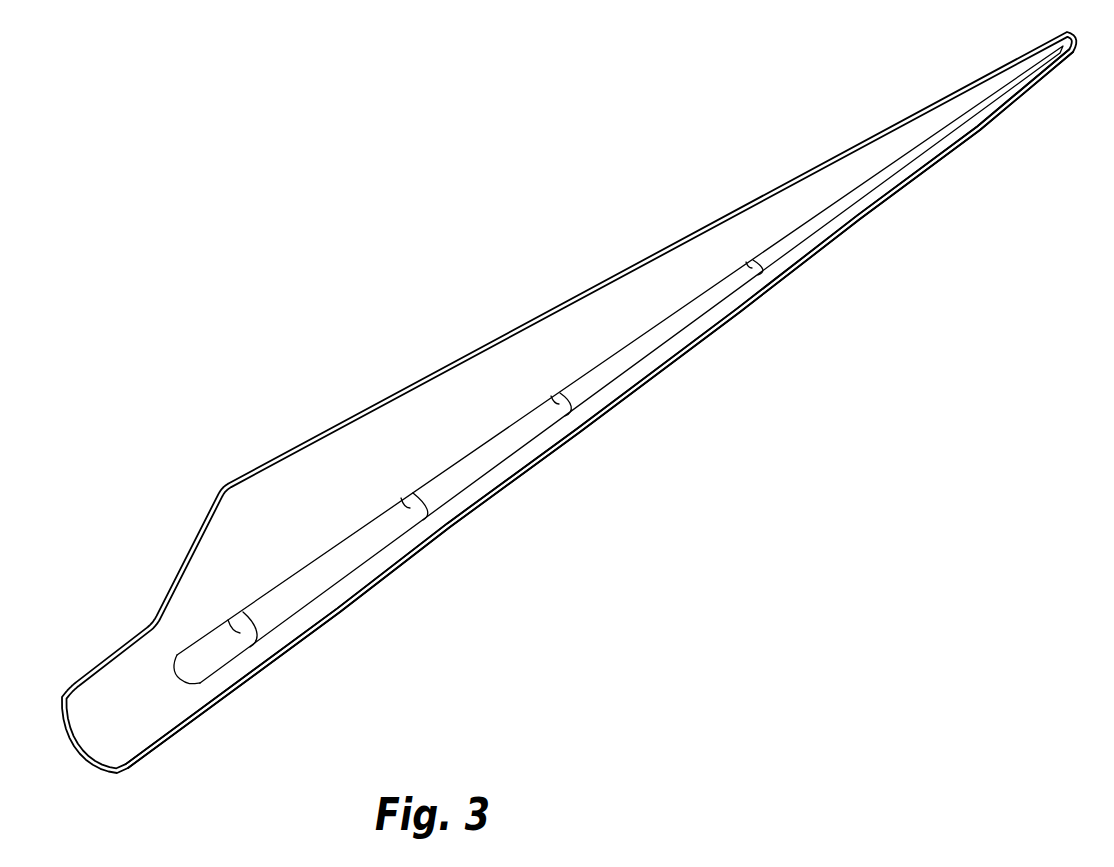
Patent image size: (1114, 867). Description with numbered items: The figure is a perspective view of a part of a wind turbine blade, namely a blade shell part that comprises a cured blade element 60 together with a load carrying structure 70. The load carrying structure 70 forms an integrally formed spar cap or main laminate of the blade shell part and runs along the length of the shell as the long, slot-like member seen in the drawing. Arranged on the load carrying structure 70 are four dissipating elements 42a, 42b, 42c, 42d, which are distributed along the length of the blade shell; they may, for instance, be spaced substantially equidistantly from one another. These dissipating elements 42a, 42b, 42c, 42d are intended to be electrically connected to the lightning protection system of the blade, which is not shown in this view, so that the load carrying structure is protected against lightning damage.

The cured blade element 60 is at (502, 357).
The load carrying structure 70 is at (533, 467).
The dissipating element 42a is at (756, 269).
The dissipating element 42b is at (575, 412).
The dissipating element 42c is at (440, 502).
The dissipating element 42d is at (258, 634).